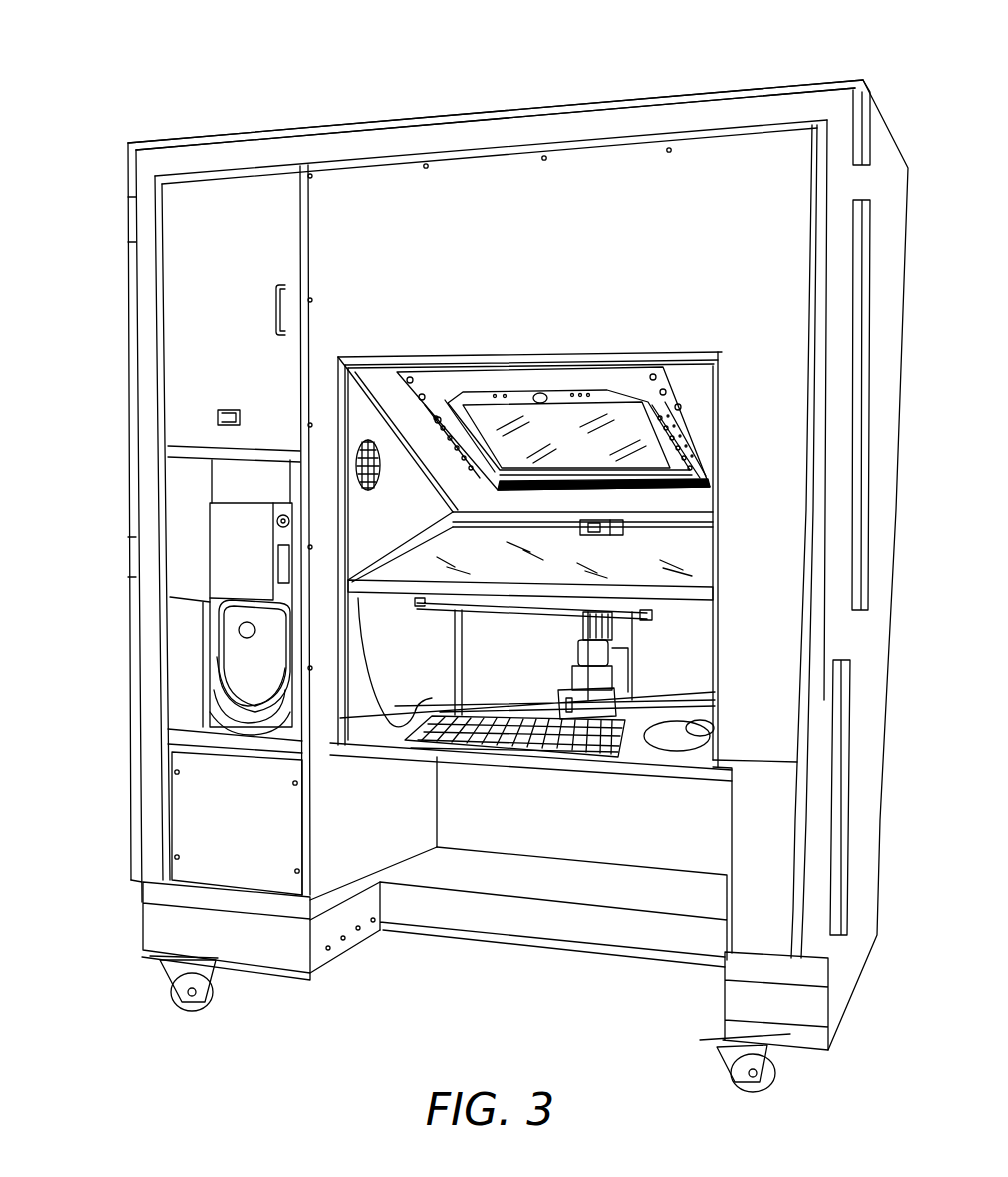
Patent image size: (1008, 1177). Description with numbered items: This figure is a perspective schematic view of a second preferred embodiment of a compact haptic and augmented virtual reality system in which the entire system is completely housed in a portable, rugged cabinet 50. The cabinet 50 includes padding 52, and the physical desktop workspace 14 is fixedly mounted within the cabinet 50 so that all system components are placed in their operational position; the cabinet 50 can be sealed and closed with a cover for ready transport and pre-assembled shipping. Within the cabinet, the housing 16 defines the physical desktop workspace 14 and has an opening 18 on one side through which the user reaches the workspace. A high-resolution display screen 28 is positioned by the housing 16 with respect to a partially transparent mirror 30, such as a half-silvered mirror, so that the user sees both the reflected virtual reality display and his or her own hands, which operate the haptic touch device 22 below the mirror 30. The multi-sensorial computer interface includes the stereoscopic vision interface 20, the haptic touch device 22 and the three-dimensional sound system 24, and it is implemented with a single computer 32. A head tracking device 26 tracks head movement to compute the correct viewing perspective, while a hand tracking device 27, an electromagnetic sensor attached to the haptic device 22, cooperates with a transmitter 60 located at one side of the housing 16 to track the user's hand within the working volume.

The physical desktop workspace 14 is at (498, 663).
The housing 16 is at (366, 430).
The opening 18 is at (385, 514).
The stereoscopic vision interface 20 is at (618, 565).
The haptic touch device 22 is at (630, 690).
The 3-d sound system 24 is at (358, 440).
The head tracking device 26 is at (625, 526).
The hand tracking device 27 is at (690, 739).
The high-resolution display screen 28 is at (660, 431).
The partially transparent mirror 30 is at (478, 560).
The single computer 32 is at (237, 544).
The cabinet 50 is at (128, 179).
The padding 52 is at (808, 106).
The transmitter 60 is at (218, 418).